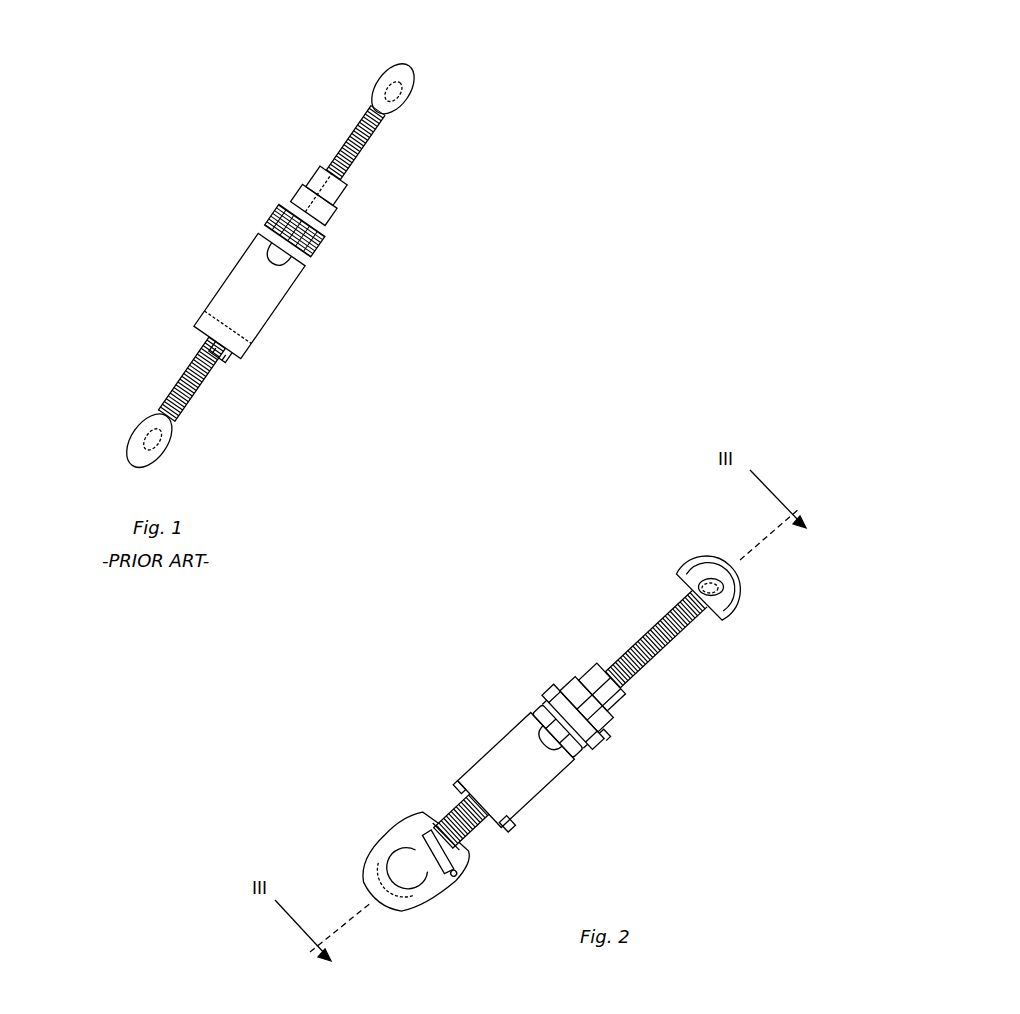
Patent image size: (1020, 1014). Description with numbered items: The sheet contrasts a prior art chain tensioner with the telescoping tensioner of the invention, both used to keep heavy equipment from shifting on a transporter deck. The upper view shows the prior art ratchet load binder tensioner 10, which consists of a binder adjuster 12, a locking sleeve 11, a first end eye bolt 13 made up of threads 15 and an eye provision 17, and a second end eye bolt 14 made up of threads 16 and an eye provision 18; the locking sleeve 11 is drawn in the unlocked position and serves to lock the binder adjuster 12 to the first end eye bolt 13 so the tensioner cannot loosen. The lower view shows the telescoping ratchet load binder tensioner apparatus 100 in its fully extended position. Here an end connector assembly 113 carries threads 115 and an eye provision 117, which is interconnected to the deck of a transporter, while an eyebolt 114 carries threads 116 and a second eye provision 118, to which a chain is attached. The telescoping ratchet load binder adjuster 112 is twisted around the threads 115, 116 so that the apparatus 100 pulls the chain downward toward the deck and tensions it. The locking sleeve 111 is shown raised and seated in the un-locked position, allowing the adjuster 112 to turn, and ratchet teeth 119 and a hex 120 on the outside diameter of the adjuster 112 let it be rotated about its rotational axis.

In FIG. 1, the ratchet load binder tensioner 10 is at (208, 252).
In FIG. 1, the locking sleeve 11 is at (255, 305).
In FIG. 1, the binder adjuster 12 is at (323, 222).
In FIG. 1, the first end eye bolt 13 is at (140, 430).
In FIG. 1, the second end eye bolt 14 is at (375, 80).
In FIG. 1, the threads 15 is at (185, 373).
In FIG. 1, the threads 16 is at (337, 156).
In FIG. 1, the eye provision 17 is at (152, 440).
In FIG. 1, the eye provision 18 is at (395, 90).
In FIG. 2, the telescoping ratchet load binder tensioner apparatus 100 is at (460, 715).
In FIG. 2, the locking sleeve 111 is at (528, 795).
In FIG. 2, the telescoping ratchet load binder adjuster 112 is at (557, 733).
In FIG. 2, the end connector assembly 113 is at (387, 843).
In FIG. 2, the eyebolt 114 is at (686, 566).
In FIG. 2, the threads 115 is at (442, 800).
In FIG. 2, the threads 116 is at (640, 637).
In FIG. 2, the eye provision 117 is at (402, 877).
In FIG. 2, the second eye provision 118 is at (735, 588).
In FIG. 2, the ratchet teeth 119 is at (552, 692).
In FIG. 2, the hex 120 is at (612, 688).